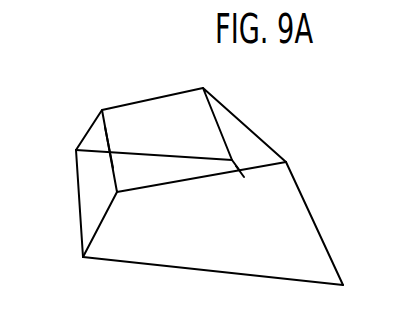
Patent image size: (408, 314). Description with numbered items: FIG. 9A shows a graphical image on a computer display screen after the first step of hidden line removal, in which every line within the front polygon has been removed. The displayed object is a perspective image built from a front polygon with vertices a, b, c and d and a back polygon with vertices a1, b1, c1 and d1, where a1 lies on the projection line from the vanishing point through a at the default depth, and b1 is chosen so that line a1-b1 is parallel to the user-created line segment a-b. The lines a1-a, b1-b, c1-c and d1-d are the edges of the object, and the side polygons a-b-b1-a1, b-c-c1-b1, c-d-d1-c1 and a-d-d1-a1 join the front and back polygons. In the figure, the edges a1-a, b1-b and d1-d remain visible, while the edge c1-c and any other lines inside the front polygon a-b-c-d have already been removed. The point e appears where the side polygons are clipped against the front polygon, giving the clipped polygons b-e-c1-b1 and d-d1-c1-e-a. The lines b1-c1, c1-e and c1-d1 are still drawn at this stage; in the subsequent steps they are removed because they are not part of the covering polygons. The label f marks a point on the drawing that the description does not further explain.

The back polygon vertex a1 is at (139, 114).
The back polygon vertex b1 is at (244, 115).
The back polygon vertex c1 is at (162, 155).
The back polygon vertex d1 is at (68, 199).
The front polygon vertex a is at (194, 161).
The front polygon vertex b is at (314, 219).
The front polygon vertex c is at (219, 274).
The front polygon vertex d is at (89, 231).
The clipping intersection point e is at (244, 179).
The point f on edge d1-c1 f is at (114, 147).